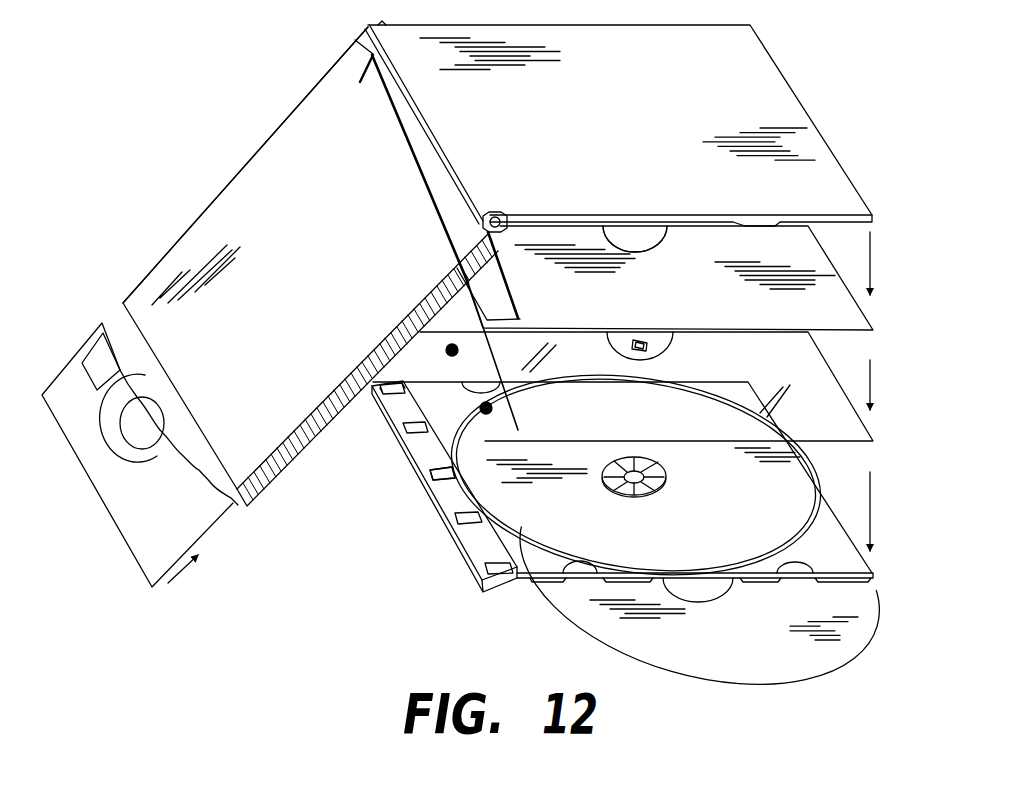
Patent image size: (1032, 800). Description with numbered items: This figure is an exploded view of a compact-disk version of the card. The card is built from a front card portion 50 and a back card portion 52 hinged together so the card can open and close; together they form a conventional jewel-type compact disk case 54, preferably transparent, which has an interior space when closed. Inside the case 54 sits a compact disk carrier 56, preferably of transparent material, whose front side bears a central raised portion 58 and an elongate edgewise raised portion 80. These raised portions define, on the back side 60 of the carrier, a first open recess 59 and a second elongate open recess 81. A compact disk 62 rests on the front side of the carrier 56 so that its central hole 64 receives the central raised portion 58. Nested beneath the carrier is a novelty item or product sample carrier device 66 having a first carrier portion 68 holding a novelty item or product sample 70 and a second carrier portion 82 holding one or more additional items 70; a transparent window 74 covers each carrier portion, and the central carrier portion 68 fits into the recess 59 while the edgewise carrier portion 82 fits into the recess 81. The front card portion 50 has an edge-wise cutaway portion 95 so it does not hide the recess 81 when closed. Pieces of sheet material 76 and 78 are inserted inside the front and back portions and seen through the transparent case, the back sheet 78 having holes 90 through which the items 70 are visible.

The front card portion 50 is at (258, 190).
The back card portion 52 is at (780, 93).
The compact disk case 54 is at (289, 96).
The compact disk carrier 56 is at (443, 527).
The central raised portion 58 is at (662, 492).
The first open recess 59 is at (650, 455).
The back side of disk carrier 60 is at (606, 536).
The compact disk 62 is at (722, 668).
The central hole 64 is at (710, 595).
The novelty item or product sample carrier device 66 is at (830, 420).
The first carrier portion 68 is at (680, 361).
The novelty item or product sample 70 is at (458, 350).
The transparent window 74 is at (672, 340).
The sheet material 76 is at (140, 545).
The sheet material 78 is at (845, 310).
The elongate edgewise raised portion 80 is at (486, 578).
The second elongate open recess 81 is at (437, 448).
The second carrier portion 82 is at (378, 360).
The holes 90 is at (660, 240).
The edge-wise cutaway portion 95 is at (412, 150).